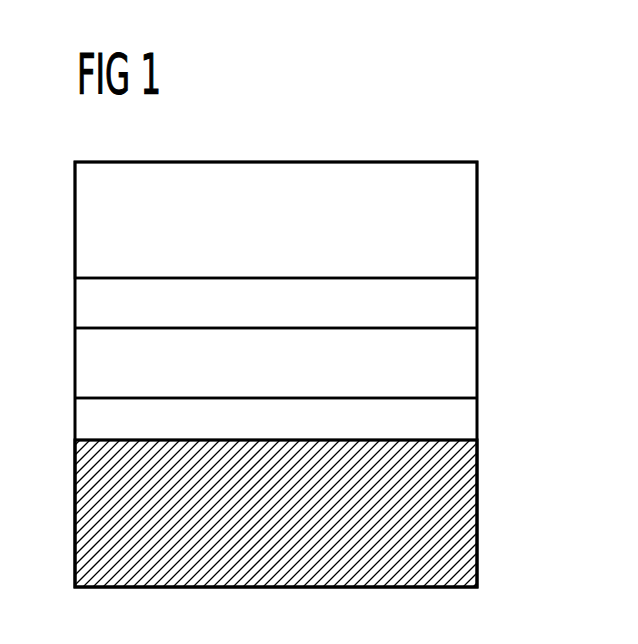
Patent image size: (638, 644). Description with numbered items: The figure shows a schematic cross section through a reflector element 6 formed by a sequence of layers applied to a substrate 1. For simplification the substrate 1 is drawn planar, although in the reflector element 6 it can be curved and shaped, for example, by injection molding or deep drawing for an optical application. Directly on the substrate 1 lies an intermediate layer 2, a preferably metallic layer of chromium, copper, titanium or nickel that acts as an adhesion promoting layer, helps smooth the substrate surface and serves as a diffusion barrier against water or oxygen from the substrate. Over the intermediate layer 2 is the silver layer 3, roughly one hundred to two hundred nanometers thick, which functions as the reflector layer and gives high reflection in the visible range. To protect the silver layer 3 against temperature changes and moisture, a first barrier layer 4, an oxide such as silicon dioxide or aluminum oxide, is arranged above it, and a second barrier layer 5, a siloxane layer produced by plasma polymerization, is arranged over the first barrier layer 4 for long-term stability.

The substrate 1 is at (467, 503).
The intermediate layer 2 is at (467, 417).
The silver layer 3 is at (467, 360).
The first barrier layer 4 is at (467, 301).
The second barrier layer 5 is at (467, 218).
The reflector element 6 is at (417, 143).